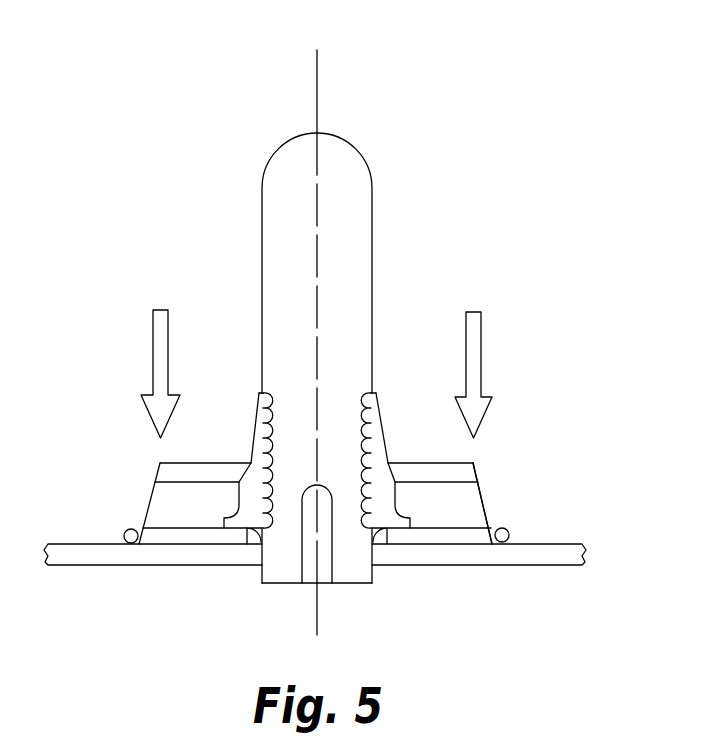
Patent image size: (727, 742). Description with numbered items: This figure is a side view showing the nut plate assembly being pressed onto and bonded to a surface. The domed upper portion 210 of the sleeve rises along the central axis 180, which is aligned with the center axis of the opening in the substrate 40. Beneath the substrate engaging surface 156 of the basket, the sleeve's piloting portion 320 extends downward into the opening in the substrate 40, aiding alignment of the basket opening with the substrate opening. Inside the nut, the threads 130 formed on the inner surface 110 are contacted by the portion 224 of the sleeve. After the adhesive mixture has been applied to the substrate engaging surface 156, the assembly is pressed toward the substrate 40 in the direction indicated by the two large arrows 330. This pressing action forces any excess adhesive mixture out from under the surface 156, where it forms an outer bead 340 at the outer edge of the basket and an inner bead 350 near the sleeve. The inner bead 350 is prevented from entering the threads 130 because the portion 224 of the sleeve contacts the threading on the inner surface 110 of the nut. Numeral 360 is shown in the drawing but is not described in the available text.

The substrate 40 is at (443, 555).
The inner surface of the nut 110 is at (367, 409).
The threads 130 is at (378, 460).
The substrate engaging surface 156 is at (478, 538).
The axis 180 is at (317, 84).
The upper portion of the sleeve 210 is at (222, 163).
The portion of the sleeve 224 is at (348, 389).
The piloting portion 320 is at (262, 593).
The arrows 330 is at (153, 325).
The outer bead 340 is at (126, 529).
The inner bead 350 is at (253, 546).
The inner tube gap 360 is at (283, 532).